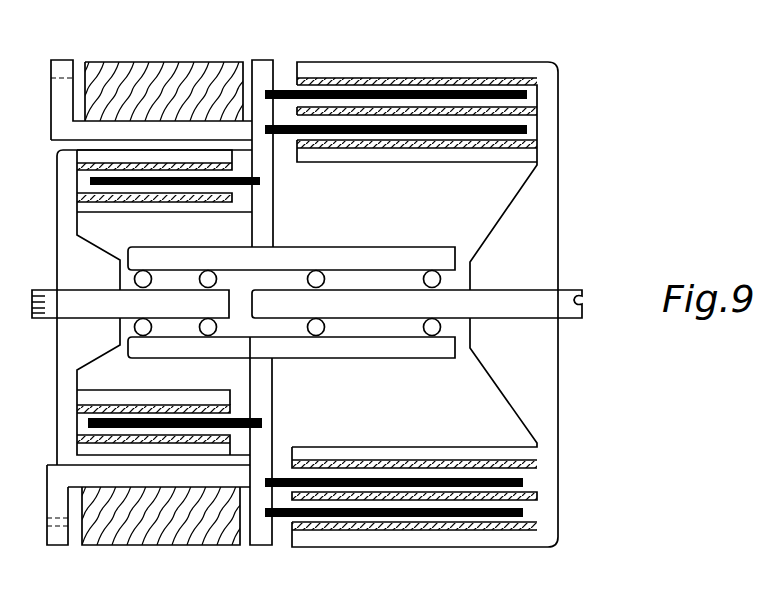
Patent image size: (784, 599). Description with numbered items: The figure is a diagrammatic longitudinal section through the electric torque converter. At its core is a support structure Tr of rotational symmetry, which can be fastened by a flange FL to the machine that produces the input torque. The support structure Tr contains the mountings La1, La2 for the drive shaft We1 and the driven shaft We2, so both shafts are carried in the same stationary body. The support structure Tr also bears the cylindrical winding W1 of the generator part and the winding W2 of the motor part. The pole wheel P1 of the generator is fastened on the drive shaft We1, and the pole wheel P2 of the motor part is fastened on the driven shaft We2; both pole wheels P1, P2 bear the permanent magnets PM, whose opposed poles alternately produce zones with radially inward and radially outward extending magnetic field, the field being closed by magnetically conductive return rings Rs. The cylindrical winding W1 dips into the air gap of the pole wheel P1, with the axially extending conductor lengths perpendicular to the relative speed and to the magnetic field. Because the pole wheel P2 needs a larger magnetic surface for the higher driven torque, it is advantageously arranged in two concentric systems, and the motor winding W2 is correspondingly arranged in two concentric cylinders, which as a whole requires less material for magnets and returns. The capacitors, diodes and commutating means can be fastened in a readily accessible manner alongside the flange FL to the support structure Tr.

The flange FL is at (55, 488).
The support structure Tr is at (272, 457).
The mounting La1 is at (203, 271).
The mounting La2 is at (432, 274).
The drive shaft We1 is at (90, 298).
The driven shaft We2 is at (522, 302).
The pole wheel P1 is at (62, 358).
The pole wheel P2 is at (545, 362).
The winding W1 is at (240, 426).
The winding W2 is at (523, 512).
The permanent magnets PM is at (232, 202).
The return yoke Rs is at (407, 540).